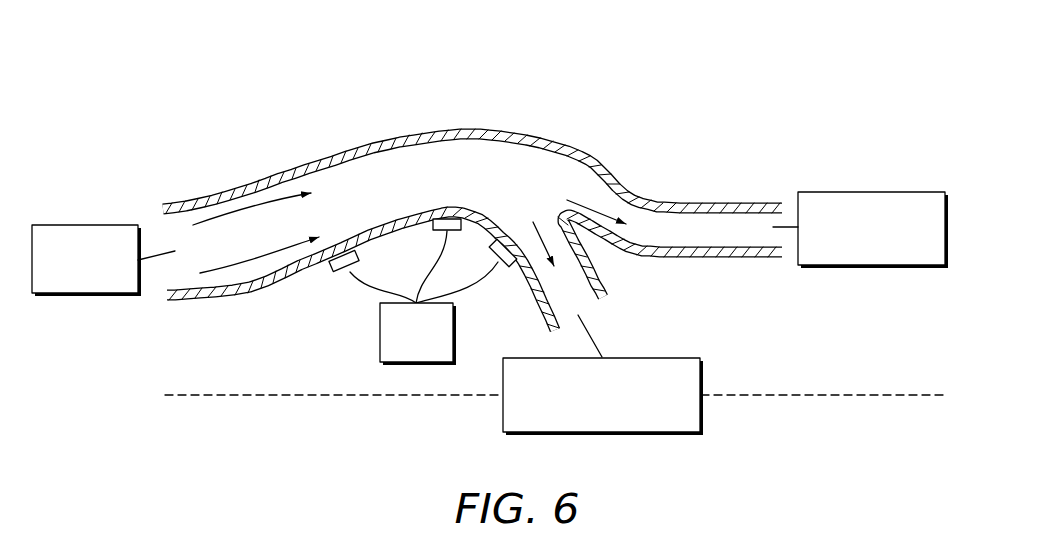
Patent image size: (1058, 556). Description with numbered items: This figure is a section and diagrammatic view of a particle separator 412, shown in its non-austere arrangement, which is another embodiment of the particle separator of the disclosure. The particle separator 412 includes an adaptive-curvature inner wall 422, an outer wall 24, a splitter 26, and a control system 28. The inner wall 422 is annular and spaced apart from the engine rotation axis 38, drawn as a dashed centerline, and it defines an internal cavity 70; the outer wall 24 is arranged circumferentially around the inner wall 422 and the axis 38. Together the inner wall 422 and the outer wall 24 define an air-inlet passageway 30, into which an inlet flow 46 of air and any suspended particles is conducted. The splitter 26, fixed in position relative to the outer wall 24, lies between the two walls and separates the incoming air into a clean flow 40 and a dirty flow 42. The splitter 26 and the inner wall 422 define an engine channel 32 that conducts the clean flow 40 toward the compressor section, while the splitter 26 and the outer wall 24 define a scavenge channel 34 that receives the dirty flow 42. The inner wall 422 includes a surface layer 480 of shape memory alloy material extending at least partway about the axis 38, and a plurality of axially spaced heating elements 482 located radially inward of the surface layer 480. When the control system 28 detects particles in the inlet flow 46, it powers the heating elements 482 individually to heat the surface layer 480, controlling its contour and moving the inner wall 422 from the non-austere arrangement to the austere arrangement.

The particle separator 412 is at (460, 172).
The outer wall 24 is at (527, 128).
The adaptive-curvature inner wall 422 is at (420, 207).
The splitter 26 is at (604, 263).
The inlet flow 46 is at (232, 222).
The internal cavity 70 is at (236, 322).
The dirty flow 42 is at (593, 197).
The surface layer 480 is at (489, 212).
The heating elements 482 is at (347, 250).
The clean flow 40 is at (520, 270).
The control system 28 is at (380, 330).
The air-inlet passageway 30 is at (88, 224).
The scavenge channel 34 is at (843, 191).
The engine channel 32 is at (557, 358).
The engine rotation axis 38 is at (286, 395).